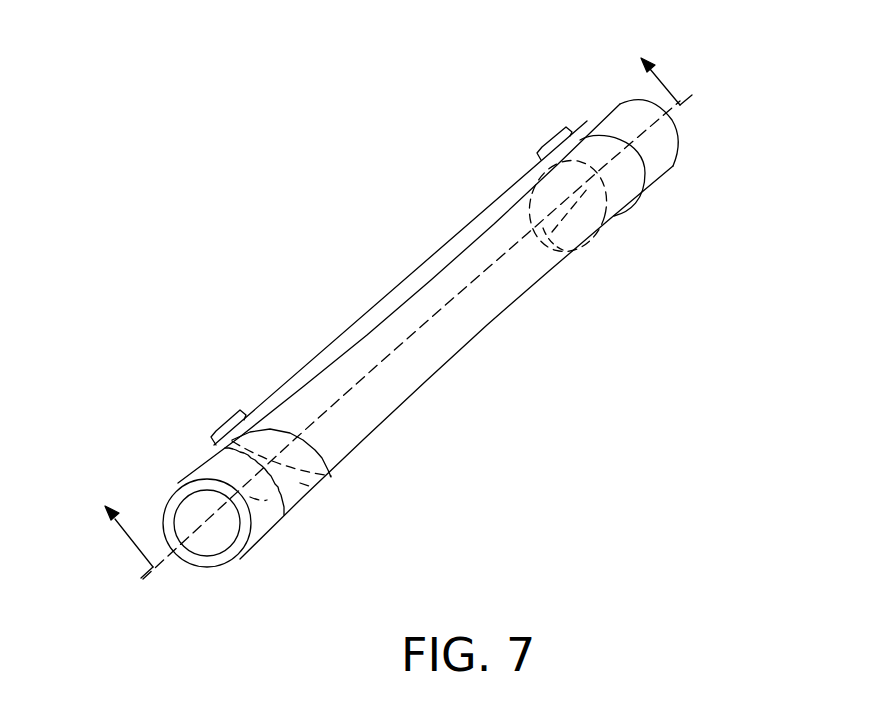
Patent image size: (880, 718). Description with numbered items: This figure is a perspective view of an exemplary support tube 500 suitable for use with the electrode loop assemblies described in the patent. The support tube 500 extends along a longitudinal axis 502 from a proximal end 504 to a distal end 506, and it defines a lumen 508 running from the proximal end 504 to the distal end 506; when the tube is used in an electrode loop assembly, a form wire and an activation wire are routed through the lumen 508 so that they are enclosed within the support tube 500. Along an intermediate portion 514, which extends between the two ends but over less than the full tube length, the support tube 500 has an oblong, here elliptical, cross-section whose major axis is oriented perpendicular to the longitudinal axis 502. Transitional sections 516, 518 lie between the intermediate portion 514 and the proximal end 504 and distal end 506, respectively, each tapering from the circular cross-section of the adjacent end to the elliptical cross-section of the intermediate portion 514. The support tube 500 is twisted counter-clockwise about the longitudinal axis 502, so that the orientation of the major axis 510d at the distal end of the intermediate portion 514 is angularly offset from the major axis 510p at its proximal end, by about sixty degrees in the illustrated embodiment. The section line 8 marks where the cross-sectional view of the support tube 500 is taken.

The support tube 500 is at (350, 176).
The longitudinal axis 502 is at (425, 335).
The proximal end 504 is at (275, 568).
The distal end 506 is at (677, 222).
The lumen 508 is at (192, 506).
The major axis at the proximal end of the intermediate portion 510p is at (290, 466).
The major axis at the distal end of the intermediate portion 510d is at (576, 262).
The intermediate portion 514 is at (389, 294).
The transitional section 516 is at (207, 423).
The transitional section 518 is at (541, 135).
The section line 8- 8 is at (388, 293).